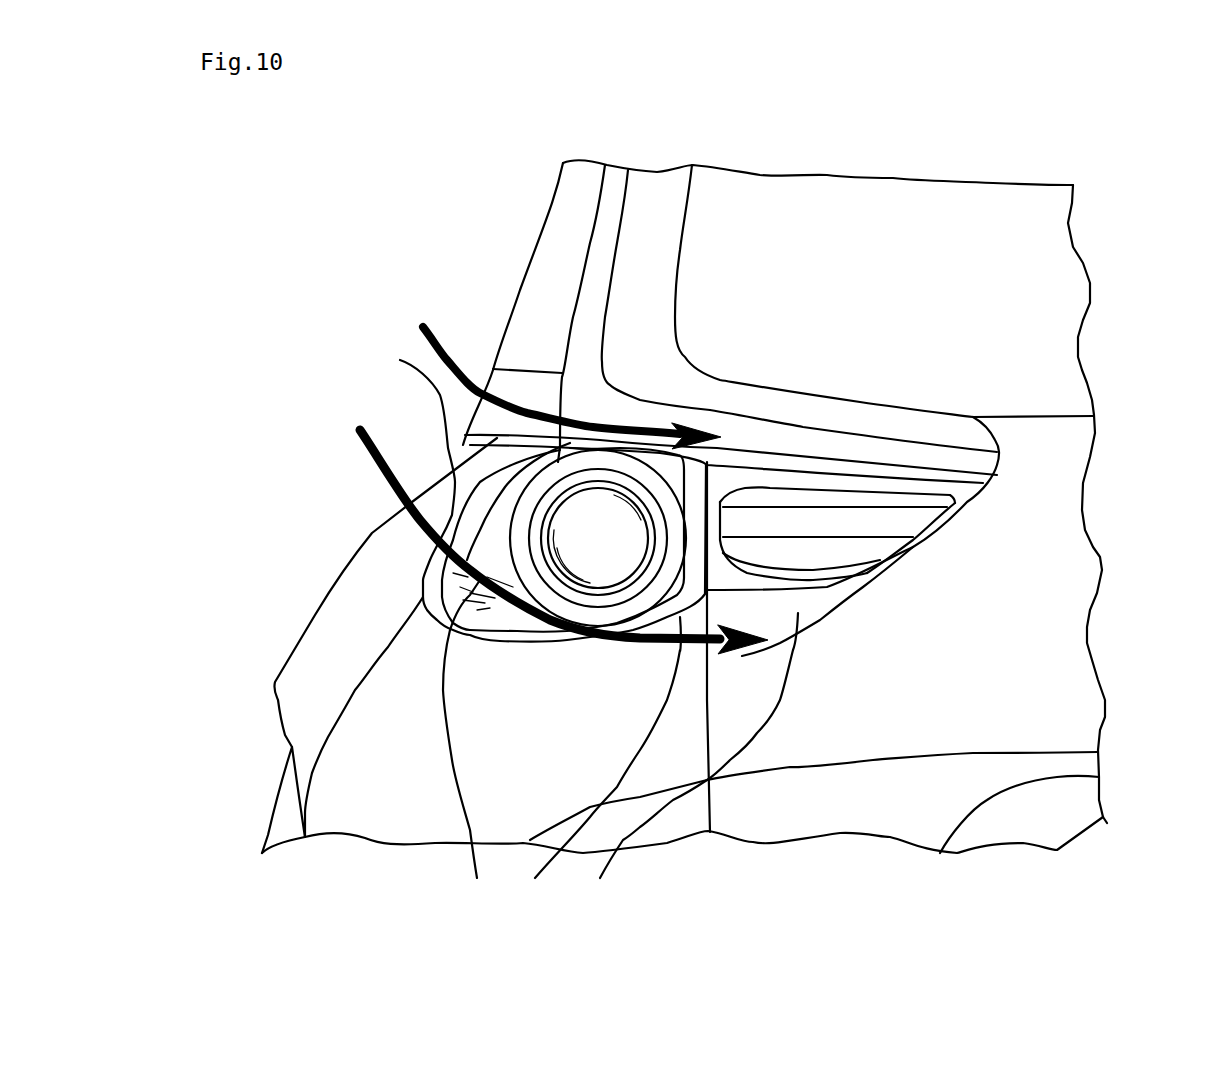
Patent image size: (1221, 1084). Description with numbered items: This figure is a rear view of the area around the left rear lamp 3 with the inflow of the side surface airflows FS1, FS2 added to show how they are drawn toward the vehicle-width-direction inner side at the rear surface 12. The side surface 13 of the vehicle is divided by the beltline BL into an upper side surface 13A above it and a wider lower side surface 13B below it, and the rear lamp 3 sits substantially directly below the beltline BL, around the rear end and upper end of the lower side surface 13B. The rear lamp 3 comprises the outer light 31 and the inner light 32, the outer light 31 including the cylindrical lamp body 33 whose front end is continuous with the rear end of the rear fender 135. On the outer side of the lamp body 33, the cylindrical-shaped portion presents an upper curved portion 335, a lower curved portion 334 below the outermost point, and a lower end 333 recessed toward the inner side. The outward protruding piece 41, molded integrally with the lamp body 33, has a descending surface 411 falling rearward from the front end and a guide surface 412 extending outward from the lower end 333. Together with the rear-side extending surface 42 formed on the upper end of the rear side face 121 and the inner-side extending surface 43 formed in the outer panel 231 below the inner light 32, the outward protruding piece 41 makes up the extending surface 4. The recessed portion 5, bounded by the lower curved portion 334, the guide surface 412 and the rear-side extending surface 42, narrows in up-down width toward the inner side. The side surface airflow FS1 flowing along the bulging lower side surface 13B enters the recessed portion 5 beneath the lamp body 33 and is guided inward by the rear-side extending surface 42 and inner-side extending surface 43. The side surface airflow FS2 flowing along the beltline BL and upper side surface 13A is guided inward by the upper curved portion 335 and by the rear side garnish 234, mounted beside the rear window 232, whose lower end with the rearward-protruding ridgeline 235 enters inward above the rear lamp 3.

The side surface 13 is at (360, 283).
The upper side surface 13A is at (486, 287).
The lower side surface 13B is at (320, 542).
The ridgeline 235 is at (612, 257).
The rear side garnish 234 is at (648, 200).
The rear window 232 is at (880, 197).
The outer panel 231 is at (963, 698).
The side surface airflow FS2 is at (458, 368).
The side surface airflow FS1 is at (380, 473).
The beltline BL is at (440, 395).
The descending surface 411 is at (462, 528).
The guide surface 412 is at (487, 607).
The lamp body 33 is at (512, 497).
The recessed portion 5 is at (472, 532).
The upper curved portion 335 is at (540, 472).
The lower curved portion 334 is at (520, 585).
The lower end 333 is at (577, 618).
The rear lamp 3 is at (828, 362).
The outer light 31 is at (673, 455).
The inner light 32 is at (807, 490).
The rear fender 135 is at (323, 622).
The rear side face 121 is at (377, 807).
The extending surface 4 is at (620, 912).
The outward protruding piece 41 is at (468, 744).
The rear-side extending surface 42 is at (600, 763).
The inner-side extending surface 43 is at (692, 761).
The rear surface 12 is at (814, 758).